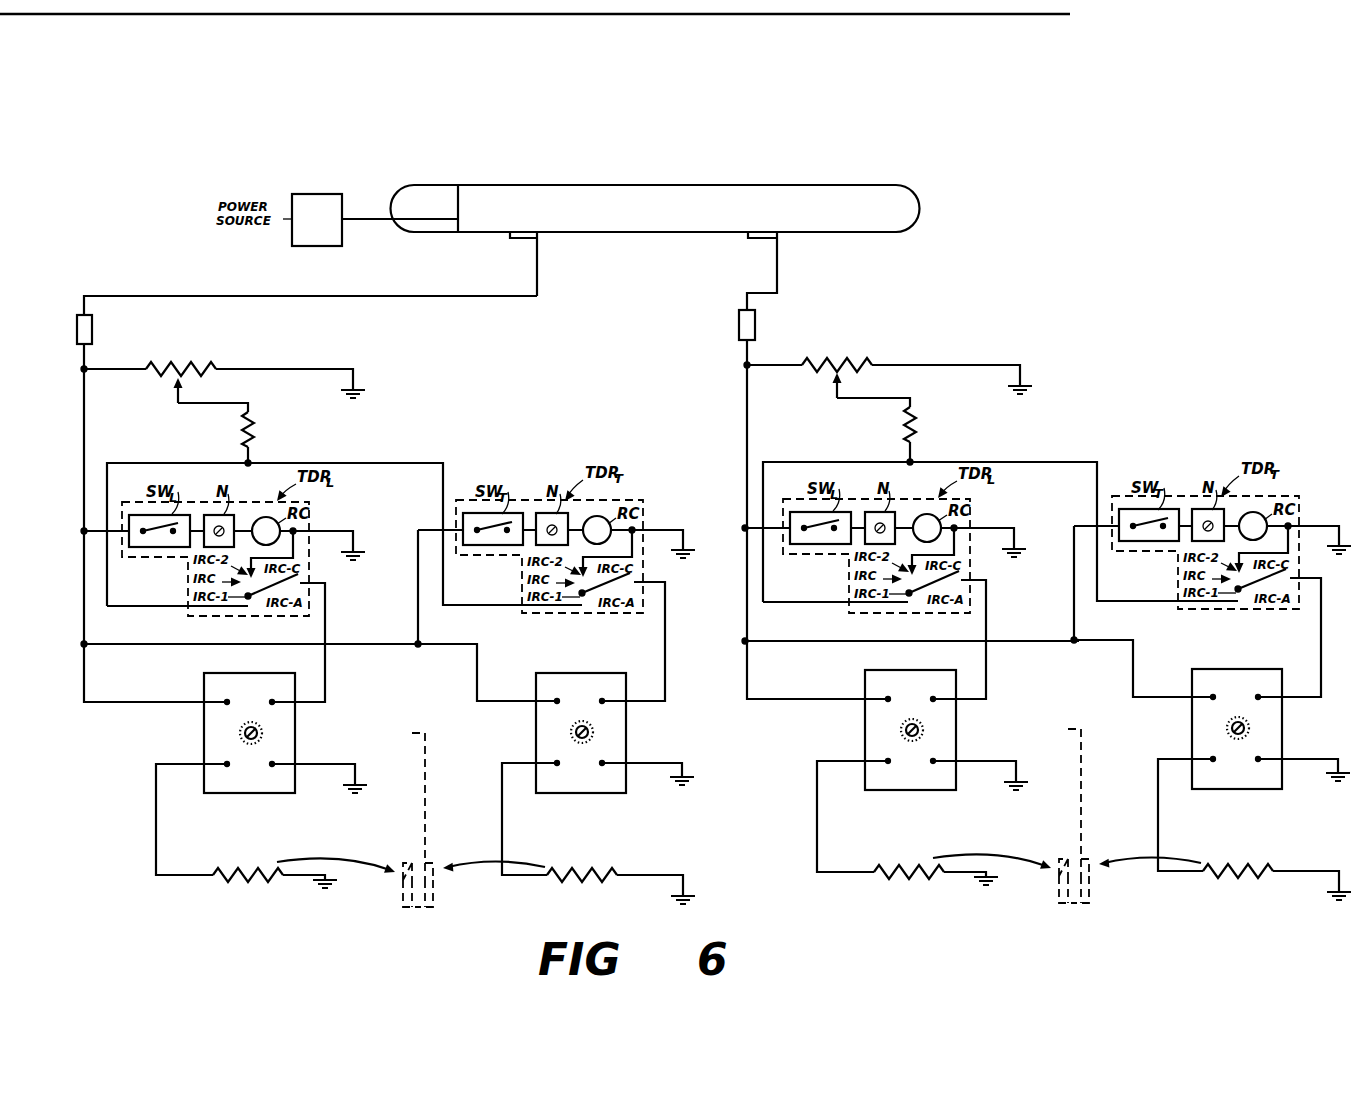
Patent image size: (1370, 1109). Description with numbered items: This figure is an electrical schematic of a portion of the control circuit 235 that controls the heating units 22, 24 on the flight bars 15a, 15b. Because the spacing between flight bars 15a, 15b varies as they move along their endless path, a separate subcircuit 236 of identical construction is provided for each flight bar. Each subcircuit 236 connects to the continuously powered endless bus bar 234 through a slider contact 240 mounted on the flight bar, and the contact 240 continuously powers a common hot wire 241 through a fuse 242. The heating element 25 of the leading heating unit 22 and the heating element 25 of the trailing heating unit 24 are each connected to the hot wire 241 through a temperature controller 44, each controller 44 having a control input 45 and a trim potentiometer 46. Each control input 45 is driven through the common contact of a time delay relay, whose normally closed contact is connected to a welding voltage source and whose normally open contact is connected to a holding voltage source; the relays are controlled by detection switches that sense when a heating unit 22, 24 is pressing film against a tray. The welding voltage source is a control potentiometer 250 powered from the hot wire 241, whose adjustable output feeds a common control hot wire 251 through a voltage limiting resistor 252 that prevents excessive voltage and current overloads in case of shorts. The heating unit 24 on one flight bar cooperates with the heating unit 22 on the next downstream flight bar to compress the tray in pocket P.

The endless bus bar 234 is at (629, 185).
The control circuit 235 is at (985, 269).
The subcircuit 236 is at (368, 355).
The slider contact 240 is at (527, 242).
The common hot wire 241 is at (85, 437).
The fuse 242 is at (92, 329).
The control potentiometer 250 is at (183, 362).
The common control hot wire 251 is at (190, 463).
The voltage limiting resistor 252 is at (258, 440).
The temperature controller 44 is at (747, 731).
The control input 45 is at (744, 719).
The trim potentiometer 46 is at (730, 724).
The heating element 25 is at (753, 831).
The flight bar 15a is at (1065, 724).
The flight bar 15b is at (409, 728).
The heating unit 24 is at (716, 891).
The heating unit 22 is at (777, 886).
The pocket P is at (765, 896).